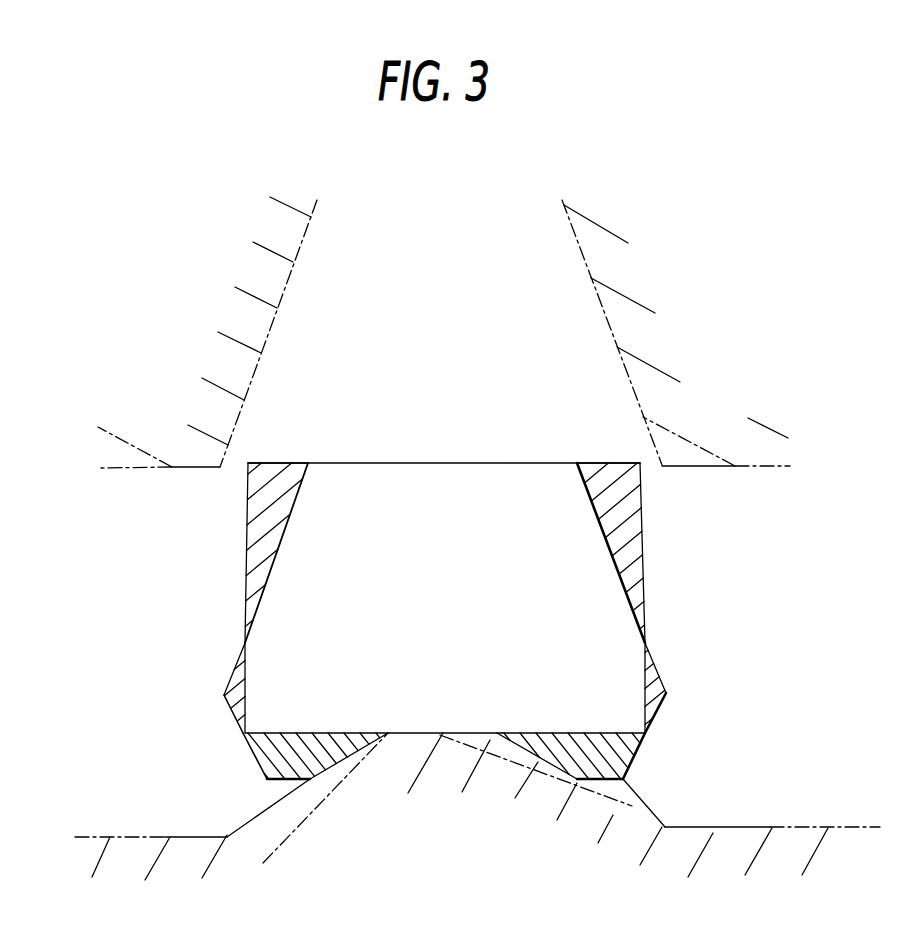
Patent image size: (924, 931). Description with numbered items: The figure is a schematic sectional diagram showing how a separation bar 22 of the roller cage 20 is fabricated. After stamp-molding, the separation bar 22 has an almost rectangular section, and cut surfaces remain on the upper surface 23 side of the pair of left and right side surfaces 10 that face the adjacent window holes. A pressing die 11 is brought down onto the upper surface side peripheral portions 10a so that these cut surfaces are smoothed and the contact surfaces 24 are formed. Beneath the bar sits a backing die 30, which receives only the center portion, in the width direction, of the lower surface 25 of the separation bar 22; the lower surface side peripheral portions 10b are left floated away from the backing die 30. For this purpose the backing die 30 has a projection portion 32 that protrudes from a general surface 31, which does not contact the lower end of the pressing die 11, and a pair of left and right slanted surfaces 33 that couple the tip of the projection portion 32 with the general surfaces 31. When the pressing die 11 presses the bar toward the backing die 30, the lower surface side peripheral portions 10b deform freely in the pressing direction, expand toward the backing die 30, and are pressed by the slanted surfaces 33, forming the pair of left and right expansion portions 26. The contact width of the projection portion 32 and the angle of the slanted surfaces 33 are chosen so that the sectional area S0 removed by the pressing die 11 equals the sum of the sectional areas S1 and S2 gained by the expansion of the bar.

The side surface 10 is at (449, 631).
The upper surface side peripheral portion 10a is at (280, 472).
The lower surface side peripheral portion 10b is at (280, 713).
The pressing die 11 is at (299, 250).
The roller cage 20 is at (445, 534).
The separation bar 22 is at (466, 623).
The upper surface 23 is at (440, 461).
The contact surface 24 is at (268, 568).
The lower surface 25 is at (425, 733).
The expansion portion 26 is at (320, 762).
The backing die 30 is at (491, 803).
The general surface 31 is at (842, 825).
The projection portion 32 is at (457, 730).
The slanted surface 33 is at (268, 808).
The reduced sectional area S0 is at (275, 518).
The increased sectional area S1 is at (230, 682).
The increased sectional area S2 is at (280, 758).